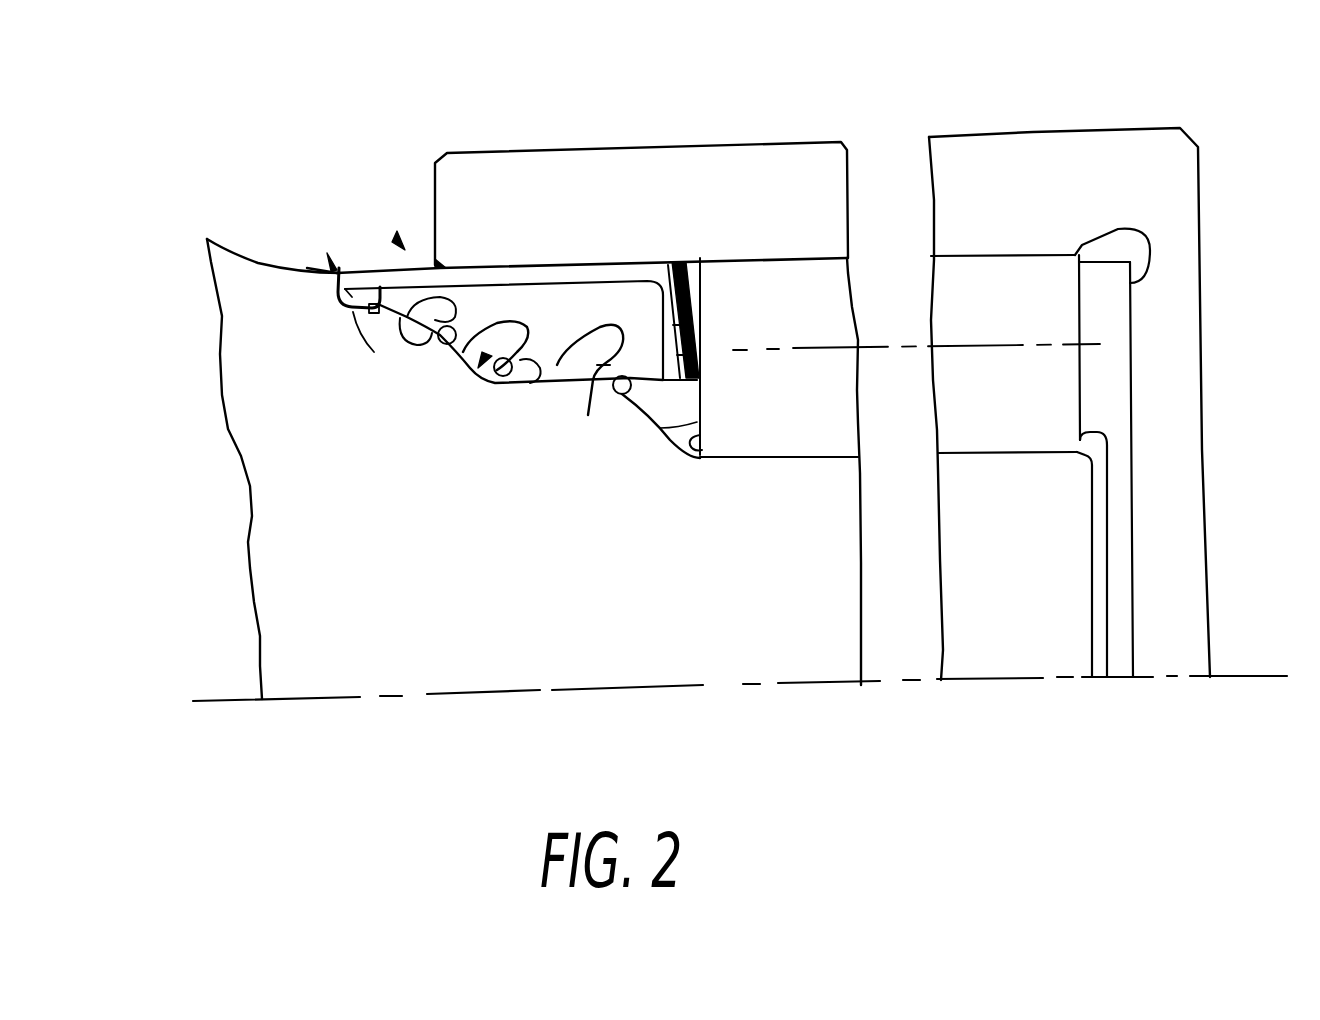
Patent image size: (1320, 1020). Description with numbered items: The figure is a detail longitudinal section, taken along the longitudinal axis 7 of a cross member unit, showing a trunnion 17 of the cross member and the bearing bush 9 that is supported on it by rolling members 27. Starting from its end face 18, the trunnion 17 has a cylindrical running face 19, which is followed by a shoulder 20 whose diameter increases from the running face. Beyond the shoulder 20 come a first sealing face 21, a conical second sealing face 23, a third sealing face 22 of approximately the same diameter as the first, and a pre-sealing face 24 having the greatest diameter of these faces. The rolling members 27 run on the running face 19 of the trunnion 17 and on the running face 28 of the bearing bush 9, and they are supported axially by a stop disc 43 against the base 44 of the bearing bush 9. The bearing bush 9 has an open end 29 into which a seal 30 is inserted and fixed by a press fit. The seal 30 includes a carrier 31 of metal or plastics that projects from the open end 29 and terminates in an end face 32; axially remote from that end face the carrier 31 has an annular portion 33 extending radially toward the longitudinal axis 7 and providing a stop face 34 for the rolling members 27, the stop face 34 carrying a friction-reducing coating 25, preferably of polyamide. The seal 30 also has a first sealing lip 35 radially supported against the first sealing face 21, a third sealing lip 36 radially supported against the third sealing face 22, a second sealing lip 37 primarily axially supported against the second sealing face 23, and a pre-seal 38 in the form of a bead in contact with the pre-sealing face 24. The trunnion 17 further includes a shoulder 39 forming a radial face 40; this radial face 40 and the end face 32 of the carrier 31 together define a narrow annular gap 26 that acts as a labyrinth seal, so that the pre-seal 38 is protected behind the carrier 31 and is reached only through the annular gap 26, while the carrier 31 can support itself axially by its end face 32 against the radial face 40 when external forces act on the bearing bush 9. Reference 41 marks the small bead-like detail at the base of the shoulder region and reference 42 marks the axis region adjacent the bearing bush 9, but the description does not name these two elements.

The longitudinal axis 7 is at (1251, 688).
The bearing bush 9 is at (812, 163).
The trunnion 17 is at (262, 555).
The end face 18 is at (1092, 555).
The cylindrical running face 19 is at (1010, 451).
The shoulder 20 is at (706, 420).
The first sealing face 21 is at (622, 396).
The third sealing face 22 is at (547, 378).
The second sealing face 23 is at (457, 355).
The pre-sealing face 24 is at (373, 354).
The friction-reducing coating 25 is at (700, 343).
The annular gap 26 is at (333, 267).
The rolling members 27 is at (840, 295).
The running face 28 is at (1008, 257).
The open end 29 is at (401, 246).
The seal 30 is at (473, 378).
The carrier 31 is at (600, 266).
The end face 32 is at (335, 289).
The annular portion 33 is at (688, 322).
The stop face 34 is at (698, 295).
The first sealing lip 35 is at (588, 416).
The third sealing lip 36 is at (494, 388).
The second sealing lip 37 is at (432, 340).
The pre-seal 38 is at (380, 297).
The shoulder 39 is at (307, 267).
The radial face 40 is at (347, 277).
The bead 41 is at (702, 450).
The center axis 42 is at (806, 350).
The stop disc 43 is at (1117, 318).
The base 44 is at (1187, 440).